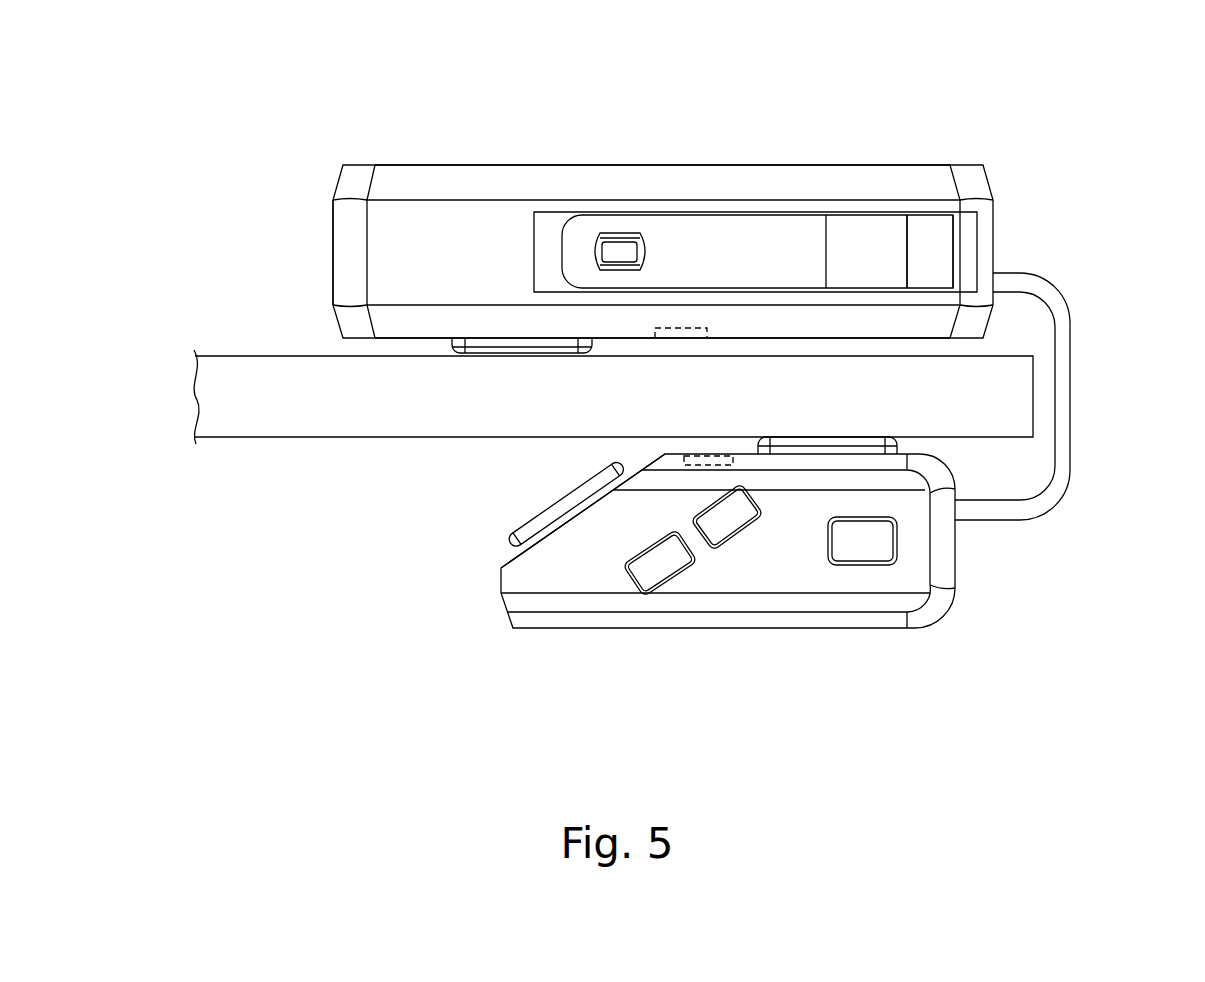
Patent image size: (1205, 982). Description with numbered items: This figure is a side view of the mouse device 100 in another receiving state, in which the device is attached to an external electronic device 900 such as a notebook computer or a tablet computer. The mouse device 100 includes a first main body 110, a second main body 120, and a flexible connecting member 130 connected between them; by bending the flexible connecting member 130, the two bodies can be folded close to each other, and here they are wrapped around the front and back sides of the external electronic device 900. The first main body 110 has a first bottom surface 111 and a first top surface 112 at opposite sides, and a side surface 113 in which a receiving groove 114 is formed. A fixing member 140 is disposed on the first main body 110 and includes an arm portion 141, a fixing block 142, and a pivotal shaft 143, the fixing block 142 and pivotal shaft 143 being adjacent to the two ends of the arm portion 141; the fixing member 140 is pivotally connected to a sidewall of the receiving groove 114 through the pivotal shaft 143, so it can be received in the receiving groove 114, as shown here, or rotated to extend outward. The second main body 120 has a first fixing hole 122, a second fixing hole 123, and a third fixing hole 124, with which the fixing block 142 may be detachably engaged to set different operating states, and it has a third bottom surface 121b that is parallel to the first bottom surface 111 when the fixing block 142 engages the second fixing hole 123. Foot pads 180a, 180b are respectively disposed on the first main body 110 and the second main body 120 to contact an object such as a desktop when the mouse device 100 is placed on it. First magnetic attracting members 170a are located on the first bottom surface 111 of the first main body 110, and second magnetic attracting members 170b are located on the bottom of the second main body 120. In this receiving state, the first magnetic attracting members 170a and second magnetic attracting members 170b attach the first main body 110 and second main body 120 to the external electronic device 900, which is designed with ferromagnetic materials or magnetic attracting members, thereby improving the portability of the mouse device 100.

The mouse device 100 is at (148, 59).
The first main body 110 is at (1016, 124).
The first bottom surface 111 is at (397, 338).
The first top surface 112 is at (443, 165).
The side surface 113 is at (347, 250).
The receiving groove 114 is at (548, 226).
The second main body 120 is at (480, 663).
The third bottom surface 121b is at (655, 462).
The first fixing hole 122 is at (864, 542).
The second fixing hole 123 is at (729, 516).
The third fixing hole 124 is at (657, 562).
The flexible connecting member 130 is at (1062, 365).
The fixing member 140 is at (595, 55).
The arm portion 141 is at (793, 230).
The fixing block 142 is at (622, 250).
The pivotal shaft 143 is at (970, 230).
The first magnetic attracting members 170a is at (690, 330).
The second magnetic attracting members 170b is at (697, 465).
The foot pad 180a is at (480, 340).
The foot pad 180b is at (545, 520).
The external electronic device 900 is at (242, 383).